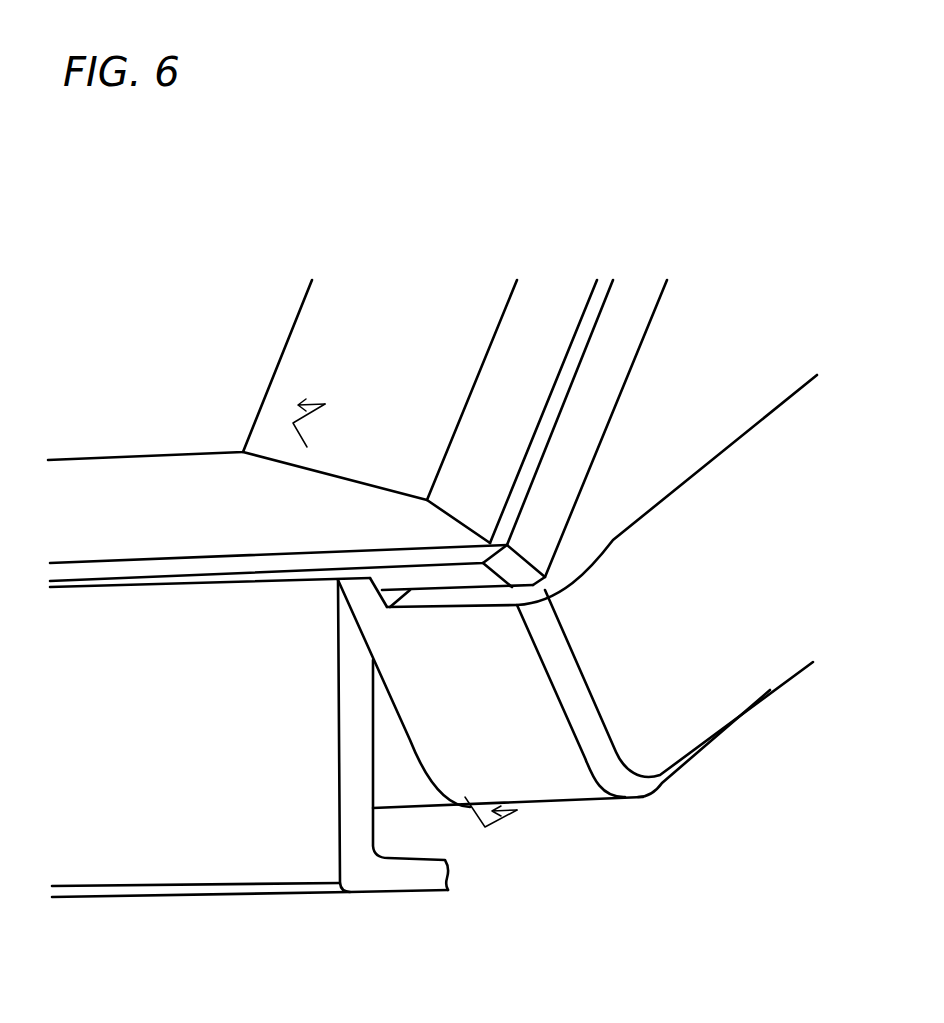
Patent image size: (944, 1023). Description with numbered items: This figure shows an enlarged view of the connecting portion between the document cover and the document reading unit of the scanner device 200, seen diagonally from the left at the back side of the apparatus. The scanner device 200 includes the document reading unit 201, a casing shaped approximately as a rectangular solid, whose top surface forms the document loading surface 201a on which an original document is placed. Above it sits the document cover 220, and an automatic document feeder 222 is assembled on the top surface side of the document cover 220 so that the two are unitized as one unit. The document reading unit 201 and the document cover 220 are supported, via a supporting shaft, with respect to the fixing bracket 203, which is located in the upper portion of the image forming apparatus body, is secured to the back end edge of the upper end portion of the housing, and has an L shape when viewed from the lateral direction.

The scanner device 200 is at (182, 305).
The document cover 220 is at (608, 335).
The automatic document feeder 222 is at (285, 420).
The document reading unit 201 is at (555, 775).
The document loading surface 201a is at (657, 493).
The fixing bracket 203 is at (377, 873).